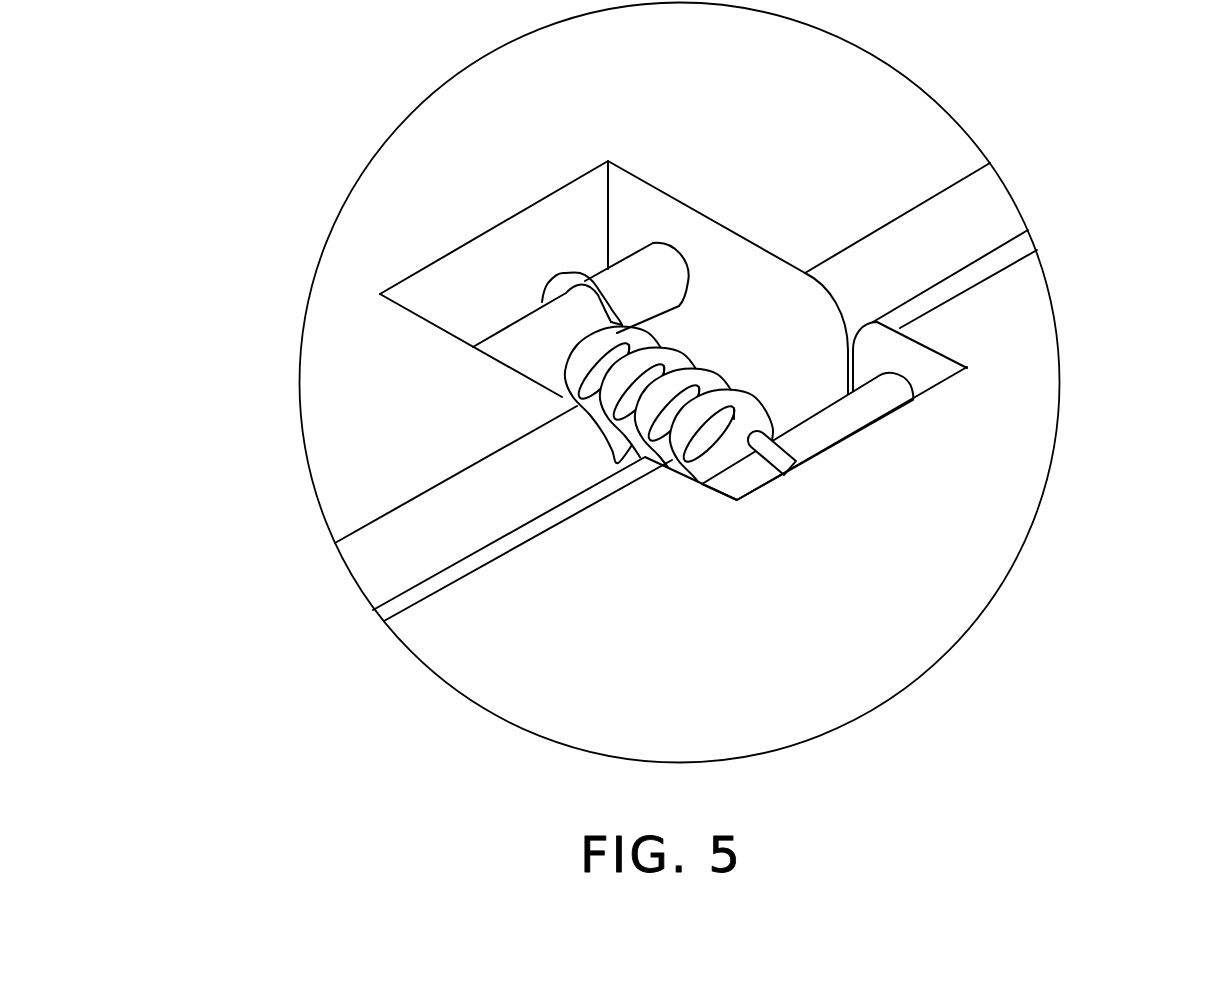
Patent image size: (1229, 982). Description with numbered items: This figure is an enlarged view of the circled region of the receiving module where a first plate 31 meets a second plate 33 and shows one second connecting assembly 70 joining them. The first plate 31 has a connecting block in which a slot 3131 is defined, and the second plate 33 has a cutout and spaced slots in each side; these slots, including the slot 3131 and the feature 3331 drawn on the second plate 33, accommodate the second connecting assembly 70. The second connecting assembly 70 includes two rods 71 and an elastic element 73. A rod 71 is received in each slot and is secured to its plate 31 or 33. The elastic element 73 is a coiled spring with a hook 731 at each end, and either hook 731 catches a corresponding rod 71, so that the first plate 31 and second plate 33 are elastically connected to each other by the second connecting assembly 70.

The first plate 31 is at (860, 130).
The slot 3131 is at (745, 320).
The second plate 33 is at (992, 423).
The protrusion 3331 is at (915, 372).
The second connecting assembly 70 is at (626, 413).
The rod 71 is at (537, 342).
The elastic element 73 is at (573, 392).
The hook 731 is at (590, 293).